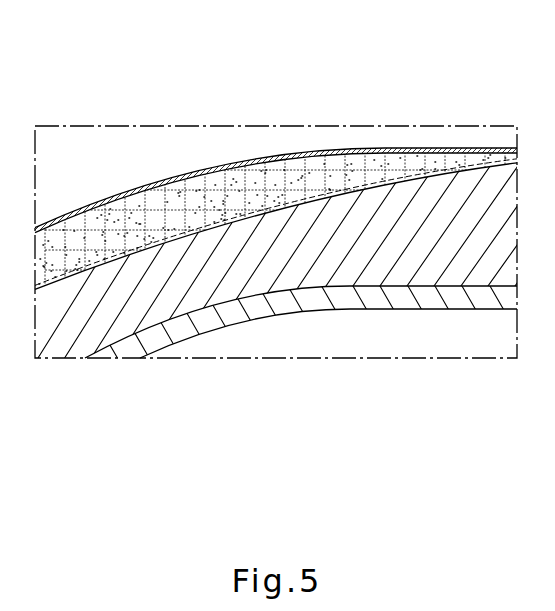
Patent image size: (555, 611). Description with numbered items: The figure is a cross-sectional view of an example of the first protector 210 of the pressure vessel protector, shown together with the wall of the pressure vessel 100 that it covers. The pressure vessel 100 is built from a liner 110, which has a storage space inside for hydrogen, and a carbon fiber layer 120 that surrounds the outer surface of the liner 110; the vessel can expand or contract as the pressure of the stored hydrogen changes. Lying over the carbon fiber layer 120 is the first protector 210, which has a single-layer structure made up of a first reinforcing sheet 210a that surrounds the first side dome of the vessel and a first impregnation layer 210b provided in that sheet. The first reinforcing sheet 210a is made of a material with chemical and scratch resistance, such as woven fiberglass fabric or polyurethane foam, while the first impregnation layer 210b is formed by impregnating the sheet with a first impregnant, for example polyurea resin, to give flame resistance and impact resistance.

The pressure vessel 100 is at (295, 301).
The liner 110 is at (452, 413).
The carbon fiber layer 120 is at (450, 243).
The first protector 210 is at (277, 164).
The first reinforcing sheet 210a is at (267, 150).
The first impregnation layer 210b is at (270, 83).